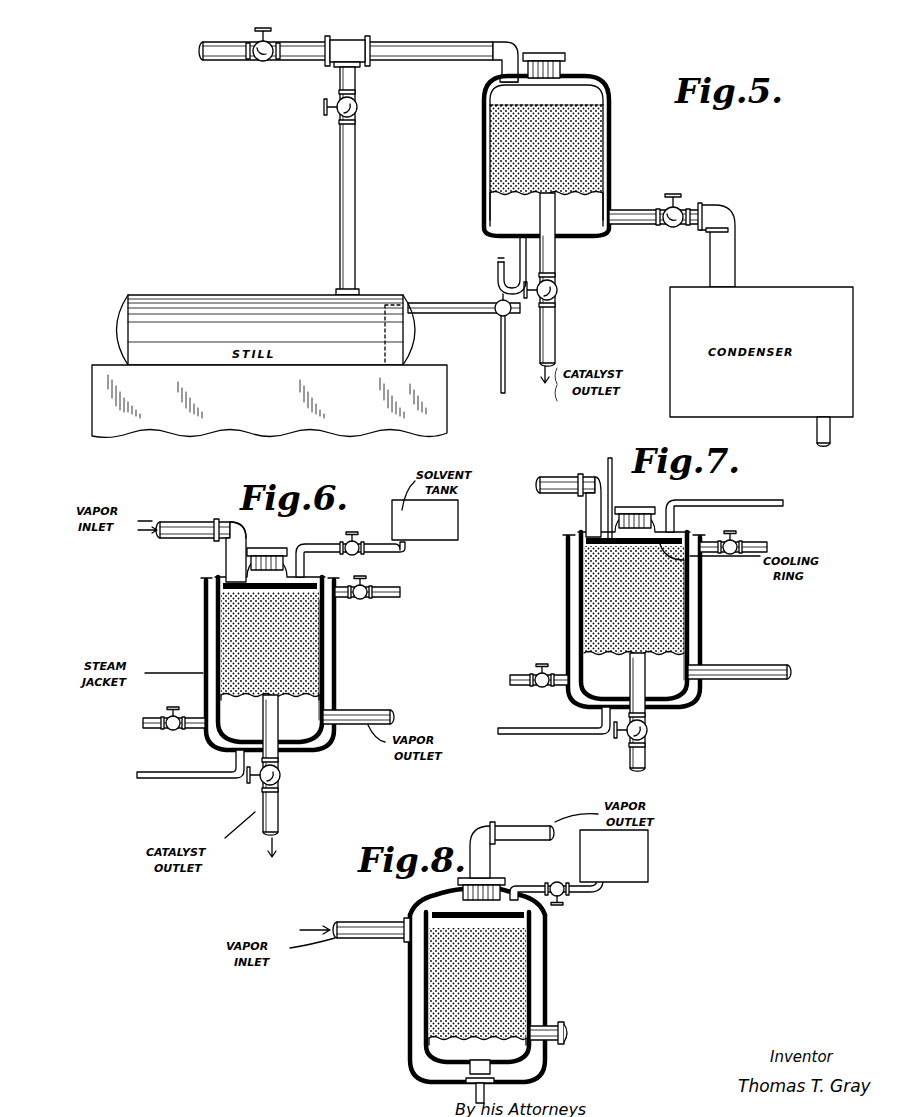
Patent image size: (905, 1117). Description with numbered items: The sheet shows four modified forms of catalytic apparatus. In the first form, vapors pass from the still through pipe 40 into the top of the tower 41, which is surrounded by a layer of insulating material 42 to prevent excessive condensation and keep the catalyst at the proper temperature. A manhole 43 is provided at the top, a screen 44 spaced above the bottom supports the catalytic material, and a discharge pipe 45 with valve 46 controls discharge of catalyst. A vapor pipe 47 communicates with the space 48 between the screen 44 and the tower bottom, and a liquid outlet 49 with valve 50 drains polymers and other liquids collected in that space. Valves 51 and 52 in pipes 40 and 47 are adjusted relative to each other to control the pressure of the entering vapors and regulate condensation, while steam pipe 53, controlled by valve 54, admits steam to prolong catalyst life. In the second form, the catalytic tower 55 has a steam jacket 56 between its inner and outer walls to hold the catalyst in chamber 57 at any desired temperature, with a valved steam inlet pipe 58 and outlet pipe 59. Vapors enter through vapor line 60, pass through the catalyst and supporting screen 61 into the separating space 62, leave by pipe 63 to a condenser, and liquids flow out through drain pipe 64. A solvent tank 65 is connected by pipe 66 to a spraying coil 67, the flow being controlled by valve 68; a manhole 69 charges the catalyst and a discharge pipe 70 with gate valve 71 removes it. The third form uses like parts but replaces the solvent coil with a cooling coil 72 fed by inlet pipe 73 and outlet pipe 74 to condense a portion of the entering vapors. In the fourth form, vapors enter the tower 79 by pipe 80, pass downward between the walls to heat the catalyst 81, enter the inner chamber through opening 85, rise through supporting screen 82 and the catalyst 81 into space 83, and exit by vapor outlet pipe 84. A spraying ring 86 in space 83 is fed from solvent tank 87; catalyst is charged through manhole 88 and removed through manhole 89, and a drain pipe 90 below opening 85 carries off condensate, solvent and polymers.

In FIG. 5, the pipe 40 is at (339, 190).
In FIG. 5, the tower 41 is at (490, 105).
In FIG. 5, the layer of insulating material 42 is at (613, 137).
In FIG. 5, the manhole 43 is at (563, 56).
In FIG. 5, the screen 44 is at (575, 190).
In FIG. 5, the discharge pipe 45 is at (553, 330).
In FIG. 5, the valve 46 is at (560, 284).
In FIG. 5, the vapor pipe 47 is at (727, 216).
In FIG. 5, the space 48 is at (546, 210).
In FIG. 5, the liquid outlet 49 is at (500, 270).
In FIG. 5, the valve 50 is at (500, 322).
In FIG. 5, the valve 51 is at (360, 114).
In FIG. 5, the valve 52 is at (682, 204).
In FIG. 5, the steam pipe 53 is at (224, 47).
In FIG. 5, the valve 54 is at (270, 44).
In FIG. 6, the catalytic tower 55 is at (338, 650).
In FIG. 7, the catalytic tower 55 is at (703, 595).
In FIG. 6, the steam jacket 56 is at (215, 640).
In FIG. 7, the steam jacket 56 is at (579, 603).
In FIG. 6, the chamber 57 is at (250, 622).
In FIG. 7, the chamber 57 is at (622, 570).
In FIG. 6, the steam inlet pipe 58 is at (386, 590).
In FIG. 7, the steam inlet pipe 58 is at (748, 545).
In FIG. 6, the outlet pipe 59 is at (158, 720).
In FIG. 7, the outlet pipe 59 is at (522, 685).
In FIG. 6, the vapor line 60 is at (178, 522).
In FIG. 7, the vapor line 60 is at (566, 490).
In FIG. 6, the supporting screen 61 is at (323, 680).
In FIG. 7, the supporting screen 61 is at (690, 632).
In FIG. 6, the separating space 62 is at (270, 713).
In FIG. 7, the separating space 62 is at (609, 676).
In FIG. 6, the pipe 63 is at (360, 712).
In FIG. 7, the pipe 63 is at (755, 668).
In FIG. 6, the drain pipe 64 is at (195, 780).
In FIG. 7, the drain pipe 64 is at (558, 734).
In FIG. 6, the solvent tank 65 is at (425, 520).
In FIG. 6, the pipe 66 is at (308, 550).
In FIG. 6, the spraying coil 67 is at (222, 582).
In FIG. 6, the valve 68 is at (355, 538).
In FIG. 6, the manhole 69 is at (274, 548).
In FIG. 7, the manhole 69 is at (636, 507).
In FIG. 6, the discharge pipe 70 is at (280, 815).
In FIG. 7, the discharge pipe 70 is at (648, 762).
In FIG. 6, the gate valve 71 is at (282, 782).
In FIG. 7, the gate valve 71 is at (650, 738).
In FIG. 7, the cooling coil 72 is at (590, 546).
In FIG. 7, the inlet pipe 73 is at (745, 500).
In FIG. 7, the outlet pipe 74 is at (608, 465).
In FIG. 8, the tower 79 is at (548, 972).
In FIG. 8, the pipe 80 is at (368, 938).
In FIG. 8, the catalyst 81 is at (500, 955).
In FIG. 8, the supporting screen 82 is at (440, 1030).
In FIG. 8, the space 83 is at (425, 952).
In FIG. 8, the vapor outlet pipe 84 is at (530, 828).
In FIG. 8, the opening 85 is at (470, 1074).
In FIG. 8, the spraying ring 86 is at (455, 912).
In FIG. 8, the solvent tank 87 is at (614, 856).
In FIG. 8, the manhole 88 is at (518, 888).
In FIG. 8, the manhole 89 is at (568, 1030).
In FIG. 8, the drain pipe 90 is at (486, 1095).